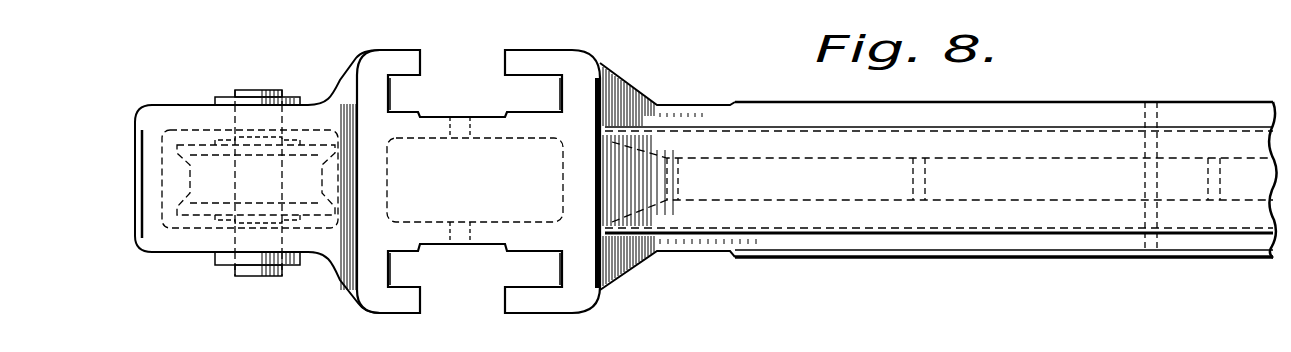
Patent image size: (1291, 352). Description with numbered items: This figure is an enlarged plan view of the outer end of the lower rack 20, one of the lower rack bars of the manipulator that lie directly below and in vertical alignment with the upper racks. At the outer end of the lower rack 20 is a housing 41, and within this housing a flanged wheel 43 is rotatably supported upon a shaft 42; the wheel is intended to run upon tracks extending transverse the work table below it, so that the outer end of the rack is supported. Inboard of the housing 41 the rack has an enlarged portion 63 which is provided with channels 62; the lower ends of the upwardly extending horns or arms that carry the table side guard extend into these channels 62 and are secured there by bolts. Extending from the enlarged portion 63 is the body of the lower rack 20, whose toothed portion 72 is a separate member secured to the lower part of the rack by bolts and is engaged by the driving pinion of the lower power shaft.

The lower rack 20 is at (939, 179).
The housing 41 is at (163, 127).
The shaft 42 is at (259, 95).
The flanged wheel 43 is at (190, 203).
The channels 62 is at (535, 82).
The enlarged portion 63 is at (475, 180).
The toothed portion 72 is at (1238, 254).